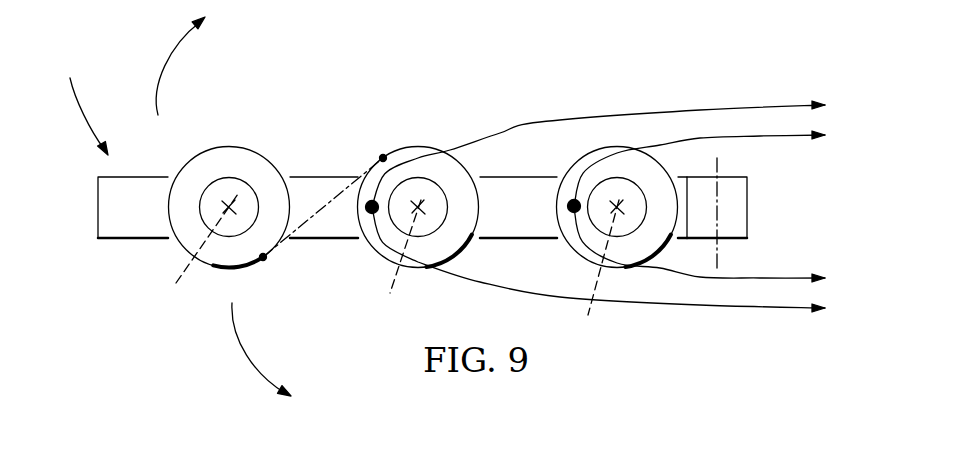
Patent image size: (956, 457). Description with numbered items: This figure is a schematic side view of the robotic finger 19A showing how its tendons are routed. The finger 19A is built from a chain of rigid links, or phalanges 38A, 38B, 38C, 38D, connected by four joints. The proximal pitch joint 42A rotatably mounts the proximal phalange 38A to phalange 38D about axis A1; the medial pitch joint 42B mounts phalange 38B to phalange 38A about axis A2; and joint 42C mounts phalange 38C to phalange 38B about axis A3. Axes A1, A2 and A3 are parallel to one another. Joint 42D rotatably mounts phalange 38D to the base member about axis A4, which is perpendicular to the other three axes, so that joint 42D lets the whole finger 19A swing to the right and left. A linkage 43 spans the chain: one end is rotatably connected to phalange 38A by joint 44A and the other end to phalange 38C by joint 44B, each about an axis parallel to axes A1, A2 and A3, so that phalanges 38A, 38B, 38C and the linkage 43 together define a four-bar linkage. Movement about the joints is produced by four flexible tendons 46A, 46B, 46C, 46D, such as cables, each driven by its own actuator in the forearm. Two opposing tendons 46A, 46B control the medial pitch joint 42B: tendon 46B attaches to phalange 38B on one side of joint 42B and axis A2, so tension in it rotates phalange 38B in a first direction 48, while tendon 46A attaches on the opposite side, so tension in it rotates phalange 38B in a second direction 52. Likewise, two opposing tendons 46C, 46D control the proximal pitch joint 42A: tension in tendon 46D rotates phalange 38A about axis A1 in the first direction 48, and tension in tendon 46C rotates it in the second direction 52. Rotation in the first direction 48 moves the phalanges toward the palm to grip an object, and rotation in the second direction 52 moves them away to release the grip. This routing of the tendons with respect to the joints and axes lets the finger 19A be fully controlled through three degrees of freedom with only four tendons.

The finger 19A is at (81, 104).
The second direction 52 is at (158, 60).
The first direction 48 is at (237, 365).
The proximal phalange 38A is at (522, 177).
The phalange 38B is at (325, 177).
The phalange 38C is at (98, 208).
The phalange 38D is at (678, 177).
The proximal pitch joint 42A is at (620, 190).
The medial pitch joint 42B is at (419, 188).
The joint 42C is at (232, 195).
The joint 42D is at (747, 207).
The linkage 43 is at (310, 218).
The joint 44A is at (383, 158).
The joint 44B is at (265, 259).
The tendon 46A is at (695, 107).
The tendon 46B is at (715, 309).
The tendon 46C is at (760, 136).
The tendon 46D is at (770, 279).
The axis A1 is at (597, 269).
The axis A2 is at (398, 260).
The axis A3 is at (200, 249).
The axis A4 is at (717, 205).